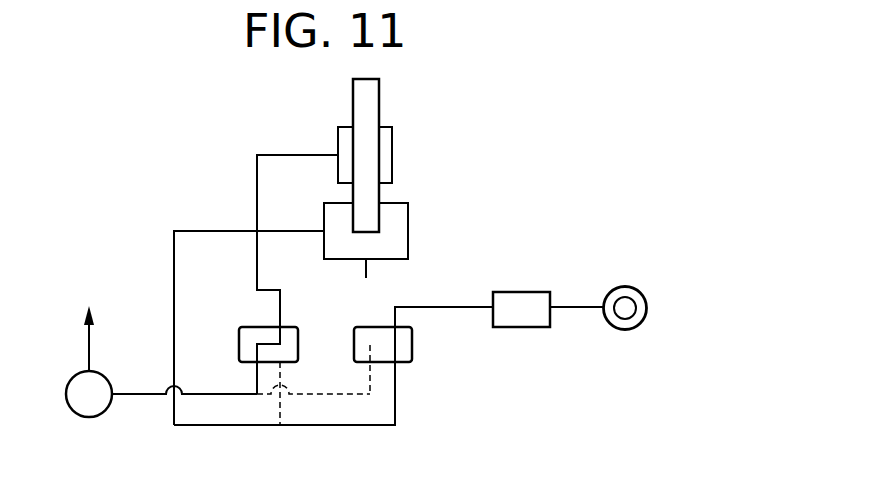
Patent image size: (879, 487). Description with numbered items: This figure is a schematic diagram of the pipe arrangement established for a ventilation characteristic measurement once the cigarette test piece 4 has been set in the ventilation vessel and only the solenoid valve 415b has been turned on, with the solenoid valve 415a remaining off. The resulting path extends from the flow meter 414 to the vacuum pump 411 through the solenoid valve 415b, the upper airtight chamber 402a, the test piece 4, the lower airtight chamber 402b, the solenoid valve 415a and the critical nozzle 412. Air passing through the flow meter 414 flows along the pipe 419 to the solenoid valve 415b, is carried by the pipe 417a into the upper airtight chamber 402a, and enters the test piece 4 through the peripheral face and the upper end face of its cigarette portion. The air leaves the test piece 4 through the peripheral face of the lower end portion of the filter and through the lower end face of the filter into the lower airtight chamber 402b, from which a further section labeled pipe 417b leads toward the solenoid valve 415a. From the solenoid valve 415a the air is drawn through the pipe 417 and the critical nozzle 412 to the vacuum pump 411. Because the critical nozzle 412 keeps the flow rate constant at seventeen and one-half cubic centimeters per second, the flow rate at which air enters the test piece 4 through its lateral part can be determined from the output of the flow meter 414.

The test piece 4 is at (372, 107).
The upper airtight chamber 402a is at (383, 147).
The lower airtight chamber 402b is at (396, 220).
The vacuum pump 411 is at (620, 290).
The critical nozzle 412 is at (517, 300).
The flow meter 414 is at (75, 412).
The three-way solenoid valve 415a is at (412, 348).
The three-way solenoid valve 415b is at (239, 343).
The pipe 417 is at (333, 425).
The pipe 417a is at (293, 155).
The wiring branch b 417b is at (207, 231).
The pipe 419 is at (142, 394).